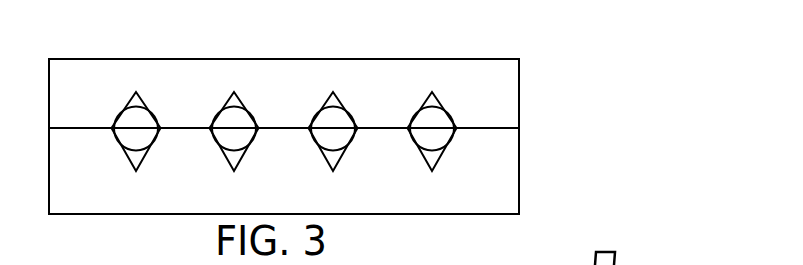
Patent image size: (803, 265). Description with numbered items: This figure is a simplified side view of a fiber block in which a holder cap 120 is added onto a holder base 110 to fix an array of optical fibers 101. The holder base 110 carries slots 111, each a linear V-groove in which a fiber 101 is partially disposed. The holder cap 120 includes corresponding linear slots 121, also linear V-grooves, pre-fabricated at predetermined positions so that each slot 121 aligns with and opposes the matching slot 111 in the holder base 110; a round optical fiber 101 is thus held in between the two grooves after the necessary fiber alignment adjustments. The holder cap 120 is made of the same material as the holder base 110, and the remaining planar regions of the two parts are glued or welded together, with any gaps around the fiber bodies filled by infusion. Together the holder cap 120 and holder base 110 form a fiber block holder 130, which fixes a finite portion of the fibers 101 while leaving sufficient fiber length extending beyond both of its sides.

The optical fiber 101 is at (433, 122).
The holder base 110 is at (493, 202).
The slot 111 is at (443, 155).
The holder cap 120 is at (515, 93).
The linear slot 121 is at (425, 107).
The fiber block holder 130 is at (623, 143).